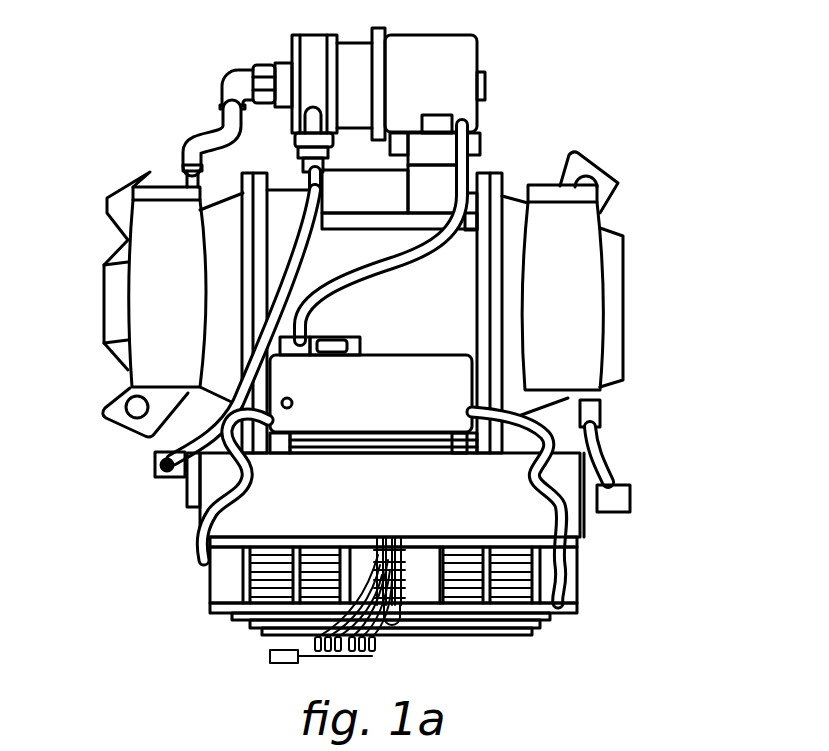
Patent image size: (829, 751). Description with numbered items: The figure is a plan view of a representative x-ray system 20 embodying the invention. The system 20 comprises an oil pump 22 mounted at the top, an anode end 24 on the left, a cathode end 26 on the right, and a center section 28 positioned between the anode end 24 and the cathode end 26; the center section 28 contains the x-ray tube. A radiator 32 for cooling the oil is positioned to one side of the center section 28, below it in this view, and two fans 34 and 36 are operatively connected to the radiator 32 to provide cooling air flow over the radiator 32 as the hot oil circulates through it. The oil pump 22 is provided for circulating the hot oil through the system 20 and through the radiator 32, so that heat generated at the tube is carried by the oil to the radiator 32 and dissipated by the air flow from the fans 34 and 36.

The x-ray system 20 is at (612, 91).
The oil pump 22 is at (428, 50).
The anode end 24 is at (142, 310).
The cathode end 26 is at (645, 306).
The center section 28 is at (438, 276).
The radiator 32 is at (255, 514).
The fan 34 is at (262, 605).
The fan 36 is at (507, 607).